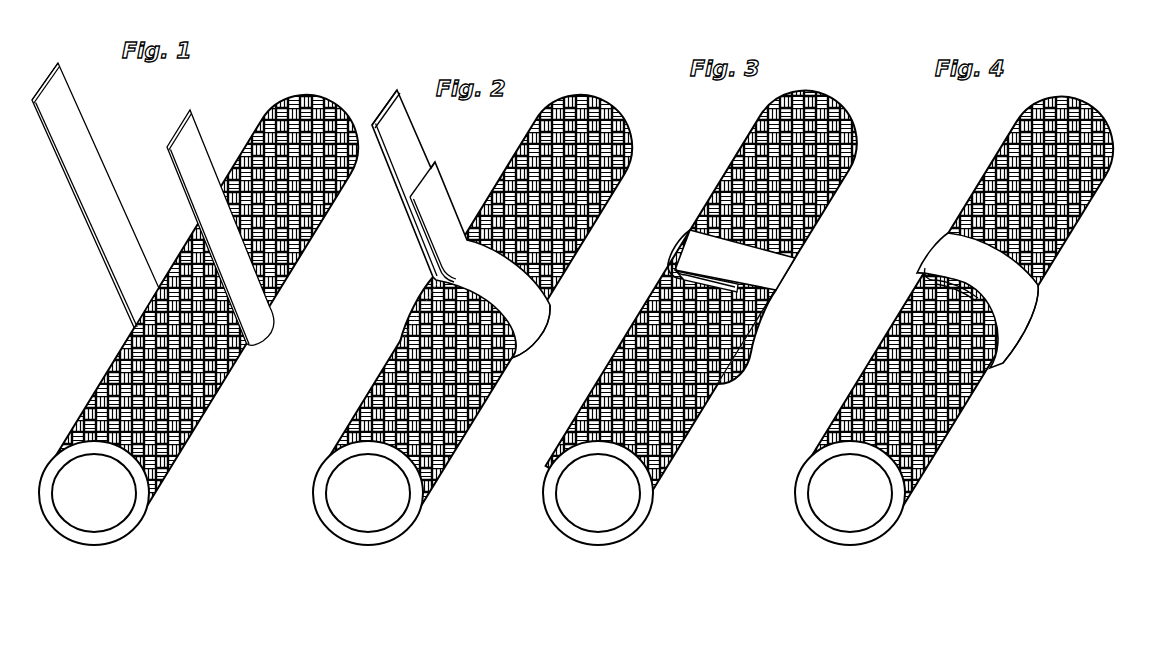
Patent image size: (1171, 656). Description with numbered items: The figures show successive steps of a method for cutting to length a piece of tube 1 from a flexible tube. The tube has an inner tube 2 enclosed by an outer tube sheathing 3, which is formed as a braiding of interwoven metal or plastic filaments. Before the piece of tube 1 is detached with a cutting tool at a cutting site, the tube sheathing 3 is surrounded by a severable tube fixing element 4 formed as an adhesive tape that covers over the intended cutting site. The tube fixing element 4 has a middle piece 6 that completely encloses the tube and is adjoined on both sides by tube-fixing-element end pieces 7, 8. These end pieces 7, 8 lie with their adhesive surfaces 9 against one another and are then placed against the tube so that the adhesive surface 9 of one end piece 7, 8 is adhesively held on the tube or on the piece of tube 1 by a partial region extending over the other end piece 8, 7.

In FIG. 1, the piece of tube 1 is at (318, 87).
In FIG. 2, the piece of tube 1 is at (614, 87).
In FIG. 3, the piece of tube 1 is at (852, 89).
In FIG. 4, the piece of tube 1 is at (1080, 89).
In FIG. 1, the inner tube 2 is at (149, 500).
In FIG. 2, the inner tube 2 is at (423, 500).
In FIG. 3, the inner tube 2 is at (650, 518).
In FIG. 4, the inner tube 2 is at (881, 530).
In FIG. 1, the tube sheathing 3 is at (272, 124).
In FIG. 2, the tube sheathing 3 is at (560, 112).
In FIG. 3, the tube sheathing 3 is at (800, 112).
In FIG. 4, the tube sheathing 3 is at (952, 404).
In FIG. 1, the tube fixing element 4 is at (159, 142).
In FIG. 2, the tube fixing element 4 is at (478, 179).
In FIG. 3, the tube fixing element 4 is at (684, 226).
In FIG. 4, the tube fixing element 4 is at (926, 228).
In FIG. 2, the middle piece 6 is at (535, 300).
In FIG. 3, the middle piece 6 is at (762, 326).
In FIG. 4, the middle piece 6 is at (1020, 324).
In FIG. 1, the tube-fixing-element end piece 7 is at (203, 147).
In FIG. 2, the tube-fixing-element end piece 7 is at (433, 222).
In FIG. 3, the tube-fixing-element end piece 7 is at (728, 289).
In FIG. 4, the tube-fixing-element end piece 7 is at (975, 293).
In FIG. 1, the tube-fixing-element end piece 8 is at (107, 217).
In FIG. 2, the tube-fixing-element end piece 8 is at (393, 182).
In FIG. 3, the tube-fixing-element end piece 8 is at (770, 262).
In FIG. 4, the tube-fixing-element end piece 8 is at (988, 274).
In FIG. 1, the adhesive surface 9 is at (70, 141).
In FIG. 2, the adhesive surface 9 is at (410, 156).